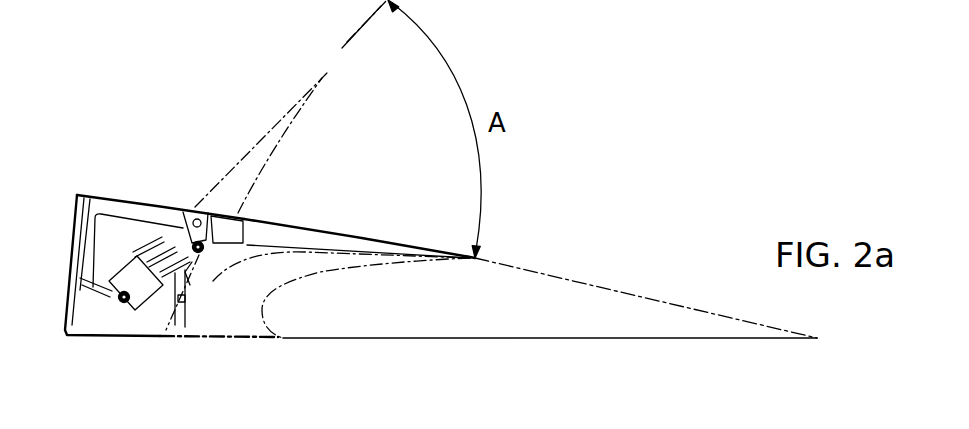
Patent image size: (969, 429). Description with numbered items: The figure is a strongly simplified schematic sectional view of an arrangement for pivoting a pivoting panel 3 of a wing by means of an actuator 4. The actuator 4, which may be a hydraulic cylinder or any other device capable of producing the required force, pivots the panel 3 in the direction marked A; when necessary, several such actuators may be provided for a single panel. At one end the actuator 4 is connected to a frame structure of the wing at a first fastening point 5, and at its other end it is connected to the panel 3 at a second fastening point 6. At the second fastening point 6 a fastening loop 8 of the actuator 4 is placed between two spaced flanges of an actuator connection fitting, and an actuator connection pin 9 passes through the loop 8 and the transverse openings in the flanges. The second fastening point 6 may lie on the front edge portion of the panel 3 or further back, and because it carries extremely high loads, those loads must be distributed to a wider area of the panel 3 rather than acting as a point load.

The pivoting panel 3 is at (328, 243).
The actuator 4 is at (184, 272).
The first fastening point 5 is at (104, 312).
The second fastening point 6 is at (241, 220).
The fastening loop 8 is at (193, 220).
The actuator connection pin 9 is at (200, 250).